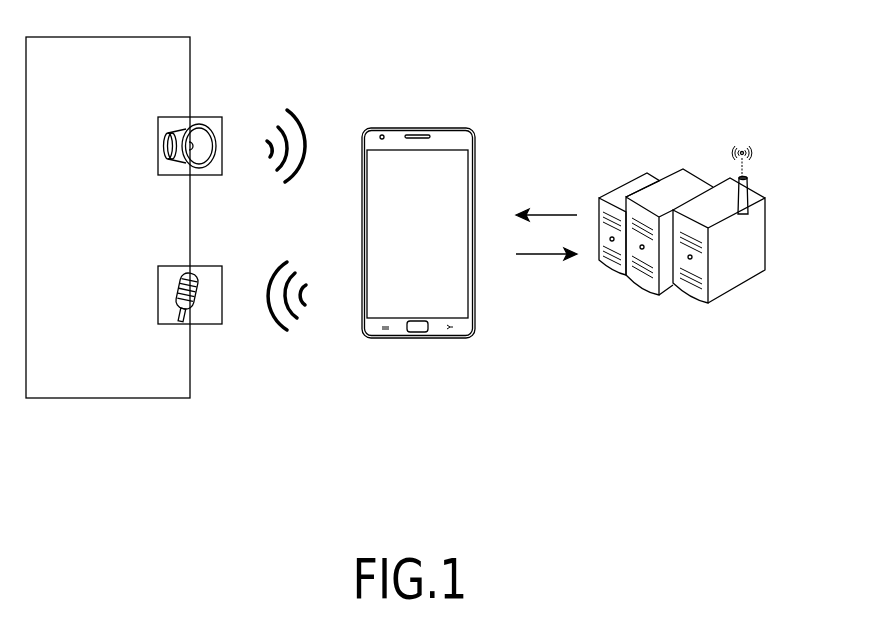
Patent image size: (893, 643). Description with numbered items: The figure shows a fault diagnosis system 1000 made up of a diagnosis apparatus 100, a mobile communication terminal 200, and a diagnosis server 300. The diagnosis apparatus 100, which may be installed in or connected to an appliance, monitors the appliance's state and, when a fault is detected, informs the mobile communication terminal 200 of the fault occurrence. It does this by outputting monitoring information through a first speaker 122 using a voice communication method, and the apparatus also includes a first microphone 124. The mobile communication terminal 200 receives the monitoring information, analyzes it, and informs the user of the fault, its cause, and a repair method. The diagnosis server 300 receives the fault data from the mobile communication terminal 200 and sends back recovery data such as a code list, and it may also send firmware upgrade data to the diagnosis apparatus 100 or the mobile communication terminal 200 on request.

The diagnosis apparatus 100 is at (108, 399).
The first speaker 122 is at (221, 116).
The first microphone 124 is at (222, 326).
The mobile communication terminal 200 is at (418, 340).
The diagnosis server 300 is at (708, 304).
The fault diagnosis system 1000 is at (737, 82).